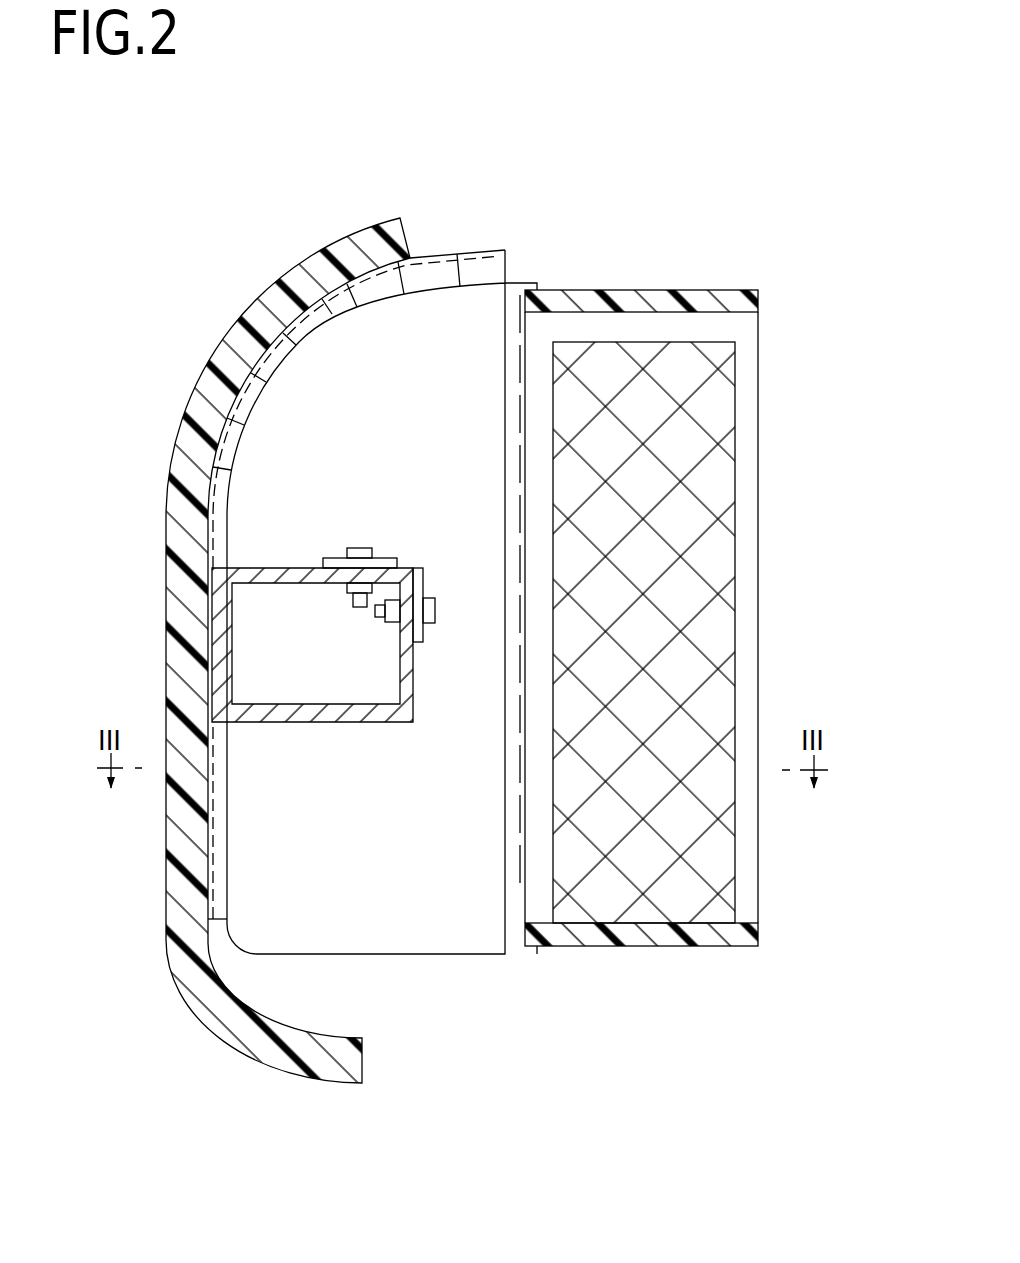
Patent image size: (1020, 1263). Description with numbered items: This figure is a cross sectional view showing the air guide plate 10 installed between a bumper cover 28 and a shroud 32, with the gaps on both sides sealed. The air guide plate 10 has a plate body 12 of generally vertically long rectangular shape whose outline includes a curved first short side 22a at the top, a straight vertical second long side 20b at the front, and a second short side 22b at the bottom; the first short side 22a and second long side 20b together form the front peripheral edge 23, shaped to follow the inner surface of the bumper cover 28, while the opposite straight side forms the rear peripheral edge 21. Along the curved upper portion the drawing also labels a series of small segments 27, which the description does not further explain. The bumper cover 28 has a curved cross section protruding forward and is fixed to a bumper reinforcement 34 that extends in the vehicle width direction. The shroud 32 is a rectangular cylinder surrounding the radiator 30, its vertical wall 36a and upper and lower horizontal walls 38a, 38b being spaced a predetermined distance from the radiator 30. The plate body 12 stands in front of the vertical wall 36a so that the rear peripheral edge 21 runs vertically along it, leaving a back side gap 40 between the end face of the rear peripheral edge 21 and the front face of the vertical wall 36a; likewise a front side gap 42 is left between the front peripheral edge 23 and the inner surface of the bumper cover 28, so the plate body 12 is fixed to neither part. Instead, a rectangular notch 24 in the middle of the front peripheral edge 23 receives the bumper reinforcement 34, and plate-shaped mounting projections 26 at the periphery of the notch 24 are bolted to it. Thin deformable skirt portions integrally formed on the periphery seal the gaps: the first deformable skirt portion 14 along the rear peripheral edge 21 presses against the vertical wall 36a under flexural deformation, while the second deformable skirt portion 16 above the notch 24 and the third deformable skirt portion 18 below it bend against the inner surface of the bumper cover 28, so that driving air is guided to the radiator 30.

The air guide plate 10 is at (512, 204).
The plate body 12 is at (419, 904).
The first deformable skirt portion 14 is at (524, 274).
The second deformable skirt portion 16 is at (443, 246).
The third deformable skirt portion 18 is at (226, 847).
The second long side 20b is at (224, 545).
The rear peripheral edge 21 is at (580, 670).
The first short side 22a is at (280, 276).
The second short side 22b is at (357, 955).
The front peripheral edge 23 is at (89, 306).
The notch 24 is at (277, 698).
The mounting projection 26 is at (383, 565).
The plate piece 27 is at (468, 262).
The bumper cover 28 is at (158, 959).
The radiator 30 is at (742, 800).
The shroud 32 is at (622, 957).
The bumper reinforcement 34 is at (360, 729).
The vertical wall 36a is at (740, 330).
The horizontal wall 38a is at (703, 300).
The horizontal wall 38b is at (700, 937).
The back side gap 40 is at (517, 303).
The front side gap 42 is at (214, 815).